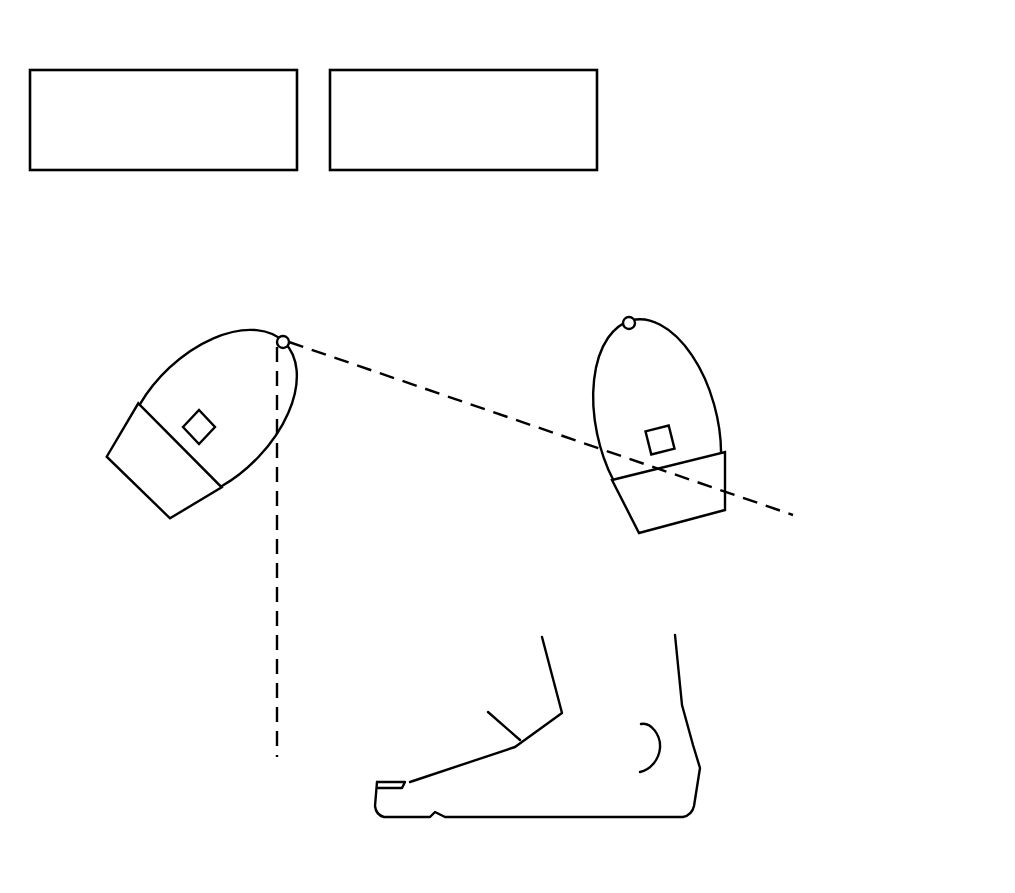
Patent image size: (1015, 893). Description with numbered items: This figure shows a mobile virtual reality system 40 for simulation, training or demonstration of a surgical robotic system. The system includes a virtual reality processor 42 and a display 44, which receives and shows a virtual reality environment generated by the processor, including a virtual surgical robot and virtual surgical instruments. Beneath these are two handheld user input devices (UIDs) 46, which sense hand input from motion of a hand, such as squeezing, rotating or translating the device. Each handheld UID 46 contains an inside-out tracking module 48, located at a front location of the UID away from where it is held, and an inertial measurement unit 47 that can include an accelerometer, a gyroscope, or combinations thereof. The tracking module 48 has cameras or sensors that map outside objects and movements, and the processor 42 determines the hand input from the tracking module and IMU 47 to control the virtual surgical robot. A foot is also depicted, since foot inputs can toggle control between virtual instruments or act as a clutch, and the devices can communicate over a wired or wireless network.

The mobile virtual reality system 40 is at (977, 47).
The virtual reality processor 42 is at (163, 120).
The display 44 is at (463, 120).
The handheld user input device 46 is at (177, 362).
The inertial measurement unit 47 is at (672, 437).
The inside-out tracking module 48 is at (635, 320).